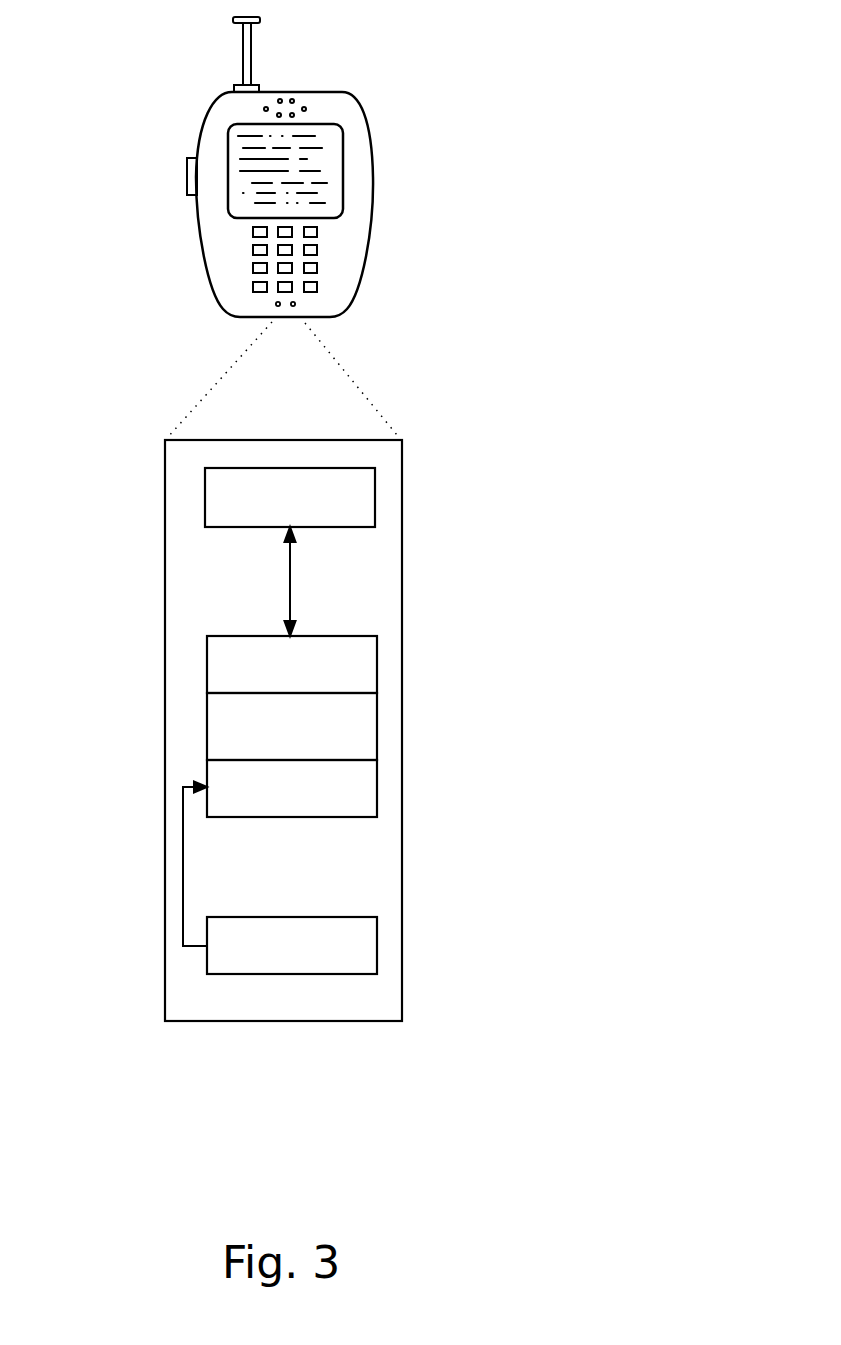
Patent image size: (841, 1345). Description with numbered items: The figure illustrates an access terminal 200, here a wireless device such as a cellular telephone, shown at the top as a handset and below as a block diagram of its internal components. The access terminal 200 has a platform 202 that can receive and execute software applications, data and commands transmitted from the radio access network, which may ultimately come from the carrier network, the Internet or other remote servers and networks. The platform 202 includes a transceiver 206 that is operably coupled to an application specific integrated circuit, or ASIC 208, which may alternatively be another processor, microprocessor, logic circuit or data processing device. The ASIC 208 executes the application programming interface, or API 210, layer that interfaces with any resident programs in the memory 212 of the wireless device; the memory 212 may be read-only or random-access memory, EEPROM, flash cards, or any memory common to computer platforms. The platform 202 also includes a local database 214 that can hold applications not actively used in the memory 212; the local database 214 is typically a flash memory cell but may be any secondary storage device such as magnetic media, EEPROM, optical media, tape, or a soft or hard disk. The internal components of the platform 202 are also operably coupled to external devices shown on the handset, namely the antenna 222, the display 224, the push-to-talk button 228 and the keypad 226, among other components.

The access terminal 200 is at (350, 295).
The platform 202 is at (165, 636).
The transceiver 206 is at (375, 497).
The application specific integrated circuit (ASIC) 208 is at (377, 672).
The application programming interface (API) 210 is at (377, 720).
The memory 212 is at (377, 787).
The local database 214 is at (377, 928).
The antenna 222 is at (252, 32).
The display 224 is at (343, 157).
The keypad 226 is at (317, 250).
The push-to-talk button 228 is at (187, 167).